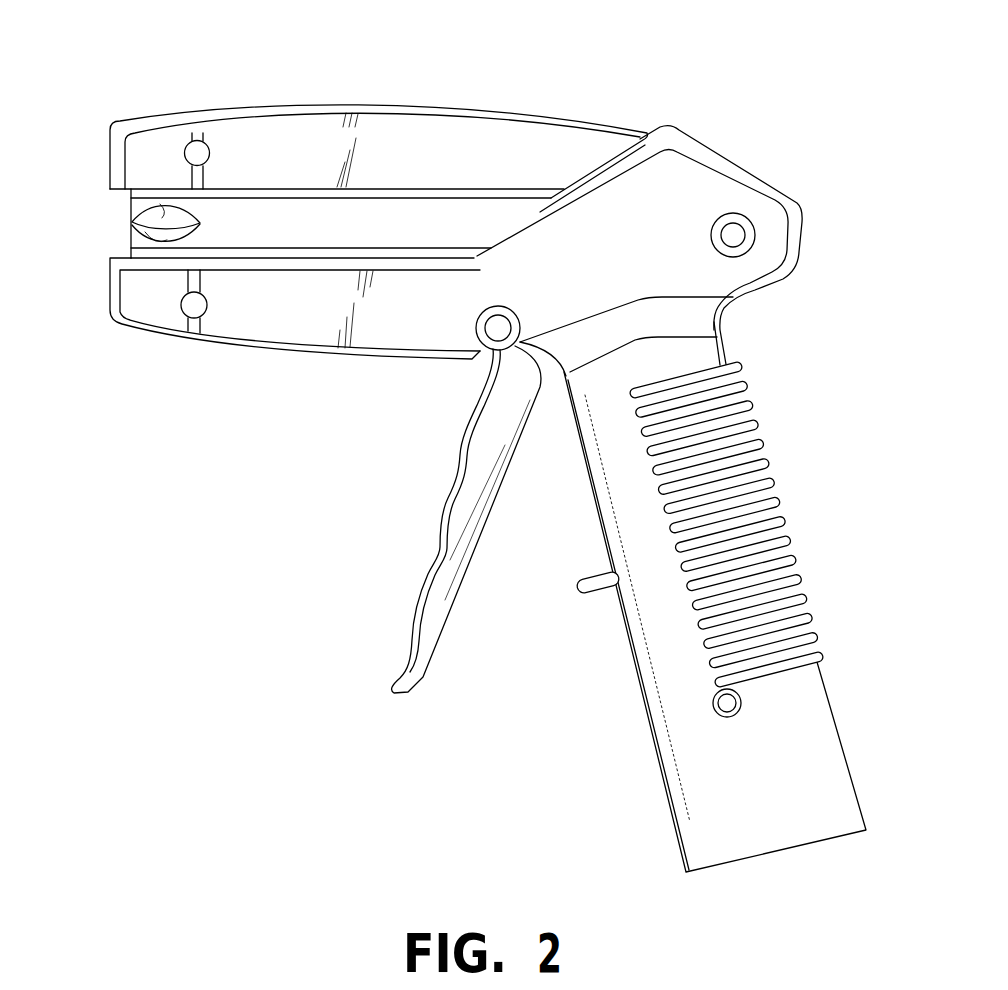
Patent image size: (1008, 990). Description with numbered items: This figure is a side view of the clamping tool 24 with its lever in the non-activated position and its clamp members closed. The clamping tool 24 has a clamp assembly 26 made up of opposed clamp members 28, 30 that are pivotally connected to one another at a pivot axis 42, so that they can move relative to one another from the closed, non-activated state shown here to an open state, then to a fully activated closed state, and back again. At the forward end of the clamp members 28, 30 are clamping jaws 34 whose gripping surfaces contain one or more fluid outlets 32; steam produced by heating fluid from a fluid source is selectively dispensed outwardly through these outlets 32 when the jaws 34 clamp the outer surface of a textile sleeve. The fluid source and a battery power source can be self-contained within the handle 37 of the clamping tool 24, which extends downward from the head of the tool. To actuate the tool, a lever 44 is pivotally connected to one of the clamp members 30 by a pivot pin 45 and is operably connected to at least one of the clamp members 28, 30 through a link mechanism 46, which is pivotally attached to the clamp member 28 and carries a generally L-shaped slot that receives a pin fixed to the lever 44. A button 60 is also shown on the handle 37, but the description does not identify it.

The clamping tool 24 is at (716, 96).
The clamp assembly 26 is at (514, 74).
The clamp member 28 is at (309, 107).
The clamp member 30 is at (173, 337).
The fluid outlets 32 is at (165, 232).
The clamping jaws 34 is at (165, 210).
The handle 37 is at (803, 585).
The pivot axis 42 is at (748, 236).
The lever 44 is at (410, 623).
The pivot pin 45 is at (478, 323).
The link mechanism 46 is at (555, 260).
The release button 60 is at (590, 584).